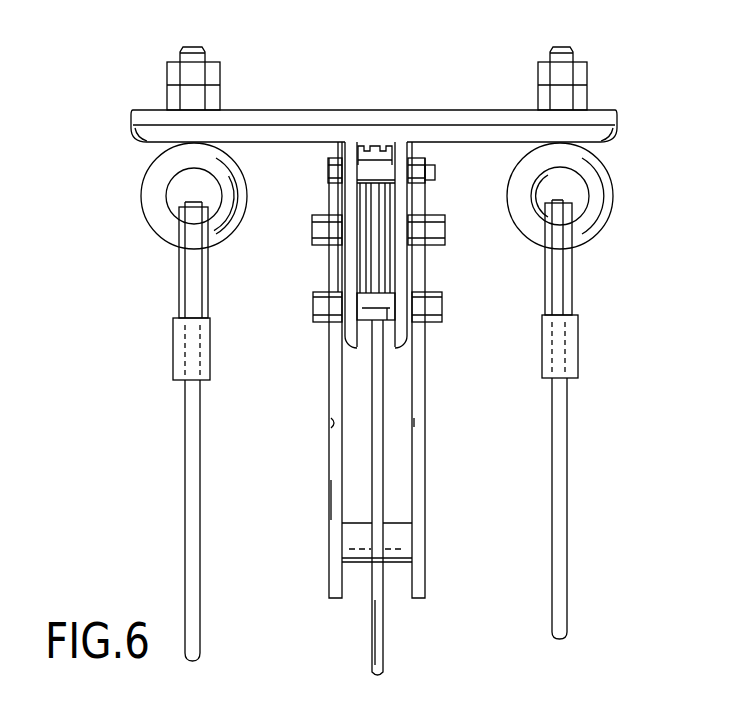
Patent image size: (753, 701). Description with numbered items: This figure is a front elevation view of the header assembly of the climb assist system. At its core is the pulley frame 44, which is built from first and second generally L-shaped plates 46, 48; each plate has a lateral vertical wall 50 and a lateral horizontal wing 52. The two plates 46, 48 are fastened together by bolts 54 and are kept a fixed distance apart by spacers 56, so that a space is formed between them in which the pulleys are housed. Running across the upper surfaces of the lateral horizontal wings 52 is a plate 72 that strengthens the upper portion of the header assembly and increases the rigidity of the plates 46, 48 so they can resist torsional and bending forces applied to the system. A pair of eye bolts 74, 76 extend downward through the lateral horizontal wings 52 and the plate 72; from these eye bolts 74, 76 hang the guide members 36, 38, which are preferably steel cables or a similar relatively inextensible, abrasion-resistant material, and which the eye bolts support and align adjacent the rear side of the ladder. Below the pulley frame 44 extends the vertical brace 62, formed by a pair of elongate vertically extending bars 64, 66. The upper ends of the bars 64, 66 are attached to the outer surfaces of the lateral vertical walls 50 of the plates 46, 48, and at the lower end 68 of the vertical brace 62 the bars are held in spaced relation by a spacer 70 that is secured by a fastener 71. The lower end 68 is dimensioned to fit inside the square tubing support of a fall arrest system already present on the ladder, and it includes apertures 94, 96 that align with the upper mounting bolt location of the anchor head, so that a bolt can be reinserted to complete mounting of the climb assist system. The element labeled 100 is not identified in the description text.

The guide member 36 is at (183, 510).
The guide member 38 is at (568, 517).
The pulley frame 44 is at (339, 100).
The first L-shaped plate 46 is at (271, 150).
The second L-shaped plate 48 is at (449, 150).
The lateral vertical wall 50 is at (345, 255).
The lateral horizontal wing 52 is at (148, 135).
The bolt 54 is at (328, 171).
The spacer 56 is at (375, 145).
The vertical brace 62 is at (325, 463).
The vertically extending bar 64 is at (328, 498).
The vertically extending bar 66 is at (425, 471).
The lower end of the vertical brace 68 is at (413, 588).
The spacer 70 is at (395, 560).
The fastener 71 is at (430, 573).
The plate 72 is at (475, 108).
The eye bolt 74 is at (147, 203).
The eye bolt 76 is at (608, 187).
The aperture 94 is at (326, 420).
The aperture 96 is at (425, 426).
The rod 100 is at (372, 625).